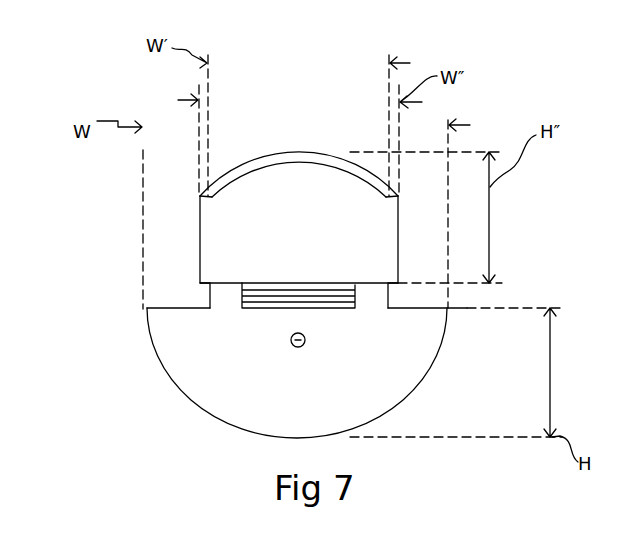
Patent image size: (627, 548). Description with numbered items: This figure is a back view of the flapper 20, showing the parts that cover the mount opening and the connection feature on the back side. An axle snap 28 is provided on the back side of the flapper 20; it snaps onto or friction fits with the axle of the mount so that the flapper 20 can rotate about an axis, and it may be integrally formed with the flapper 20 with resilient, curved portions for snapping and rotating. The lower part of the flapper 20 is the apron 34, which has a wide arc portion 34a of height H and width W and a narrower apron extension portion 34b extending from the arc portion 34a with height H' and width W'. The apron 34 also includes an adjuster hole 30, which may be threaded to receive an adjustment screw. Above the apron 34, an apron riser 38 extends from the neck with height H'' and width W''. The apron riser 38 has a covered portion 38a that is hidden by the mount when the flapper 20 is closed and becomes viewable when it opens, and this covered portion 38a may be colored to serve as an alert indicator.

The flapper 20 is at (120, 291).
The axle snap 28 is at (263, 321).
The adjuster hole 30 is at (293, 347).
The apron 34 is at (167, 341).
The arc portion 34a is at (460, 398).
The apron extension portion 34b is at (203, 288).
The apron riser 38 is at (218, 212).
The covered portion 38a is at (300, 152).